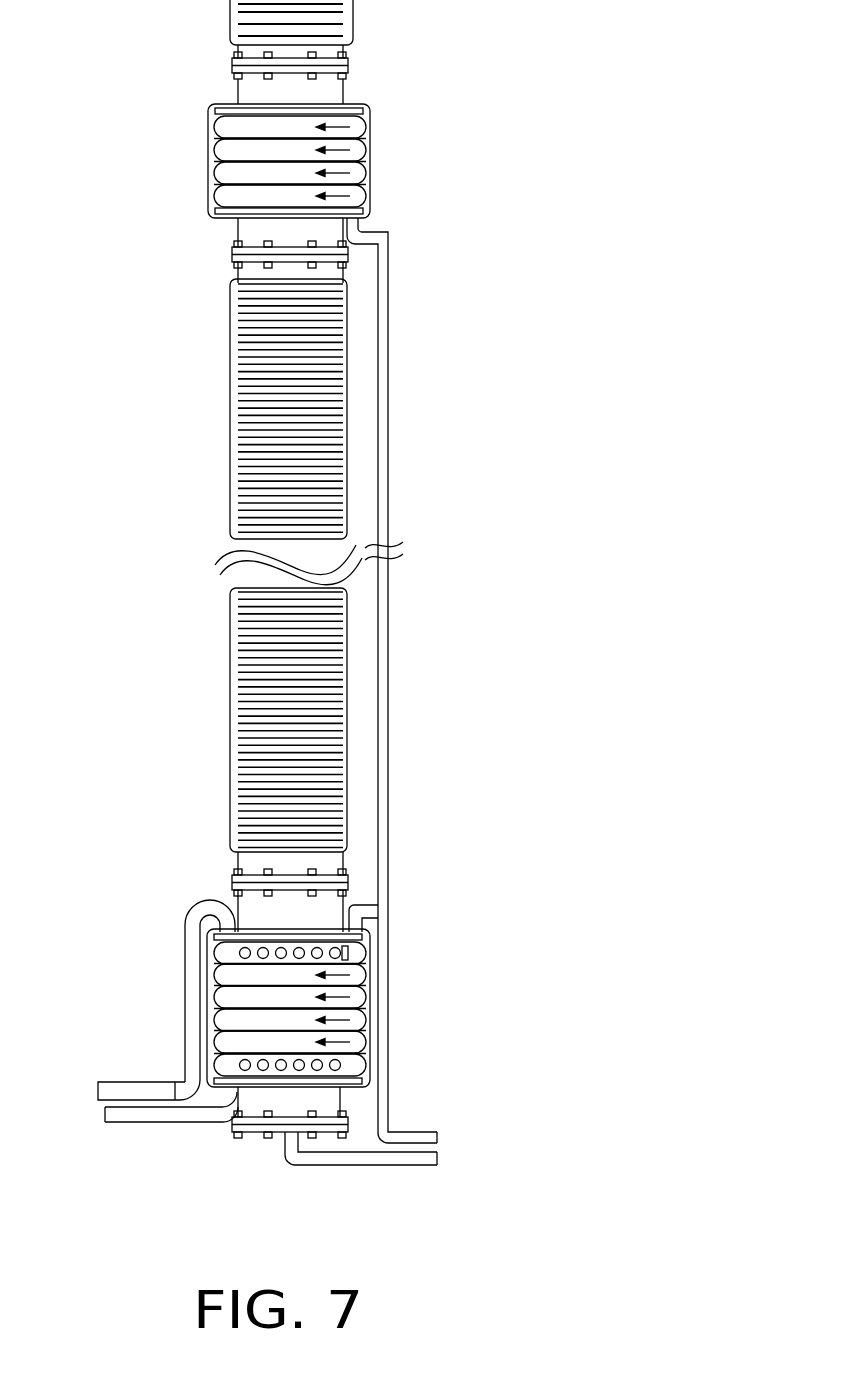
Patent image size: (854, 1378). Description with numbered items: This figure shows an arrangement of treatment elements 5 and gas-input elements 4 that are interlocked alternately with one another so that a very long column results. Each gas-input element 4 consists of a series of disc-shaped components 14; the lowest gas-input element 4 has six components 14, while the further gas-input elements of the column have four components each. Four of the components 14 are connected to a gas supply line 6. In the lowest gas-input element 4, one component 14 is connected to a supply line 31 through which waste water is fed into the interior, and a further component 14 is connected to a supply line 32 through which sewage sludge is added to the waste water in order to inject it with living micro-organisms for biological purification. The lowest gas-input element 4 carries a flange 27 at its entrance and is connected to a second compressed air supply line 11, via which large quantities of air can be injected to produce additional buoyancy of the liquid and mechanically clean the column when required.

The gas-input element 4 is at (222, 147).
The treatment element 5 is at (250, 17).
The gas supply line 6 is at (385, 390).
The second compressed air supply line 11 is at (323, 1157).
The disc-shaped component 14 is at (372, 140).
The flange 27 is at (235, 250).
The supply line for waste water 31 is at (130, 1090).
The supply line for sewage sludge 32 is at (138, 1122).